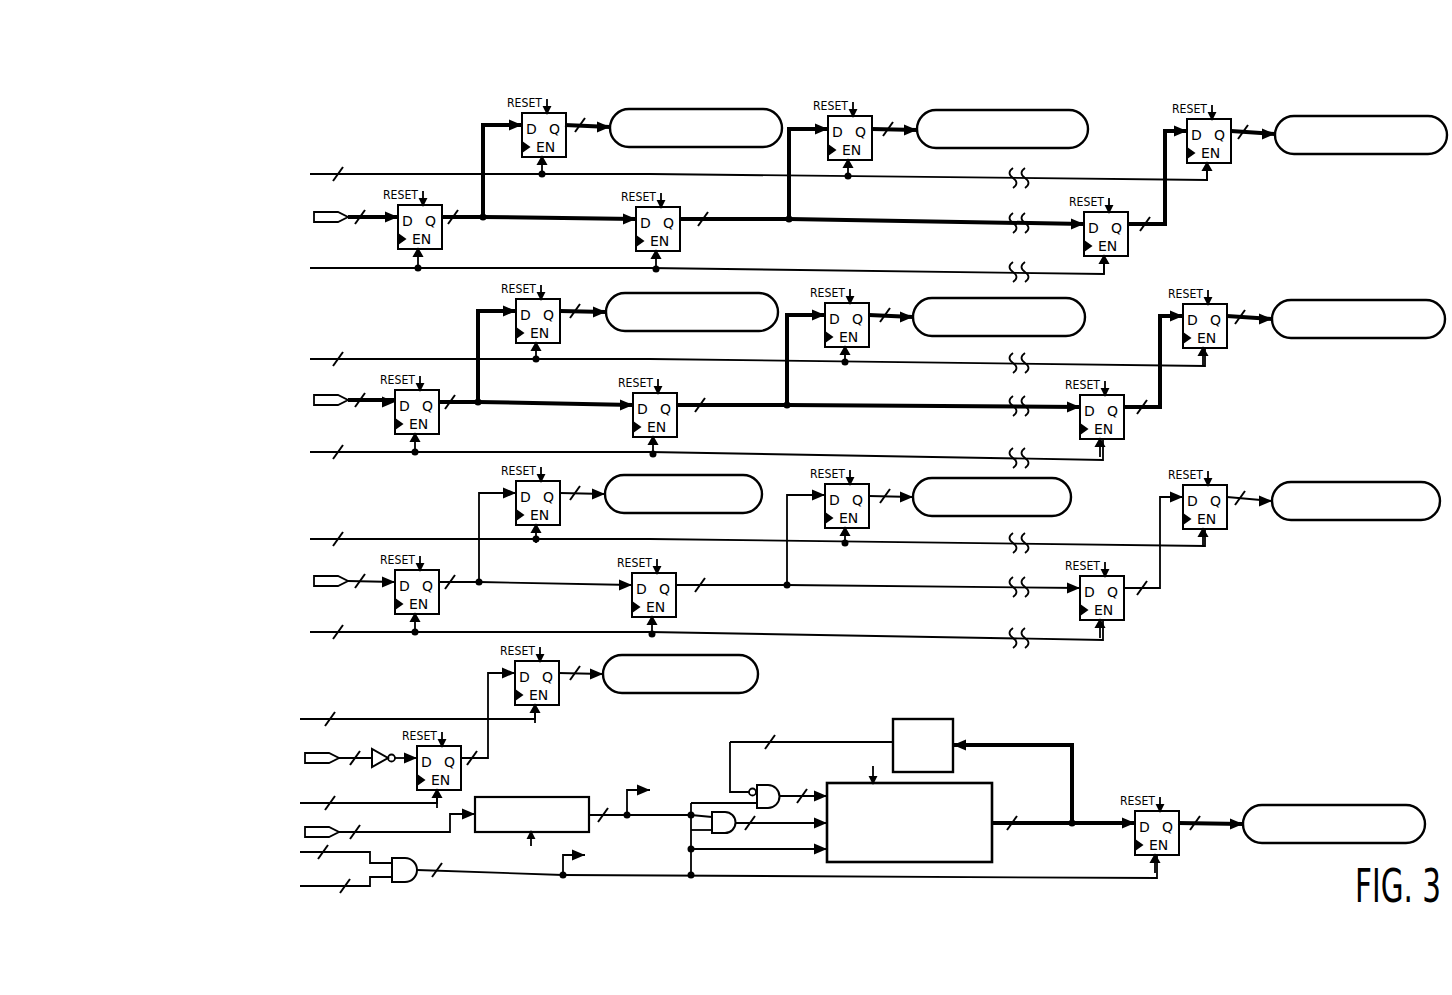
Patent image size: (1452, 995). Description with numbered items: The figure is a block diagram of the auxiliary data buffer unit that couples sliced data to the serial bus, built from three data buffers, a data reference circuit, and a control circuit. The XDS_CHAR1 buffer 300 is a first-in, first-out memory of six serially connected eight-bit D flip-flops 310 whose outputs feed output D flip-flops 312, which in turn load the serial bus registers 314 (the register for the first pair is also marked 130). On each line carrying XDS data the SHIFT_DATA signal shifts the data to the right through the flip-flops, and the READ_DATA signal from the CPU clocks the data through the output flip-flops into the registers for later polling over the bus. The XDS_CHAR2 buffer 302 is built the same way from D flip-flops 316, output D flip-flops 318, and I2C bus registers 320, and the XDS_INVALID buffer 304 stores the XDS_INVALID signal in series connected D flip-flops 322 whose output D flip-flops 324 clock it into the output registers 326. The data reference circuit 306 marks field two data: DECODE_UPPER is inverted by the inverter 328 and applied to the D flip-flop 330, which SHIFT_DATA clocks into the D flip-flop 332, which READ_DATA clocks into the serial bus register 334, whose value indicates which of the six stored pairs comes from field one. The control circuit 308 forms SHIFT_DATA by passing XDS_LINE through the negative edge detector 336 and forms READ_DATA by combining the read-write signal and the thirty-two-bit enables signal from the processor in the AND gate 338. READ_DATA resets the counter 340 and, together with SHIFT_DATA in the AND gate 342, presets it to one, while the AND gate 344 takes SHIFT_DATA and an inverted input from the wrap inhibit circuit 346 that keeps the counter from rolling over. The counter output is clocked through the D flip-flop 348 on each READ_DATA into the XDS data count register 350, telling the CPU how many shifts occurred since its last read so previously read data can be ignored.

The XDS pair 1 character 1 output register 130 is at (678, 94).
The XDS_CHAR1 buffer 300 is at (206, 190).
The XDS_CHAR2 buffer 302 is at (200, 371).
The XDS_INVALID buffer 304 is at (200, 564).
The data reference circuit 306 is at (218, 824).
The control circuit 308 is at (183, 853).
The 8-bit wide D flip-flops 310 is at (443, 242).
The output D flip-flops 312 is at (550, 112).
The serial bus registers 314 is at (711, 109).
The D flip-flops 316 is at (440, 428).
The output D flip-flops 318 is at (560, 333).
The I2C bus registers 320 is at (1350, 360).
The series connected D flip-flops 322 is at (440, 604).
The output D flip-flops 324 is at (561, 515).
The output registers 326 is at (715, 513).
The inverter 328 is at (385, 746).
The D flip-flop 330 is at (462, 784).
The D flip-flop 332 is at (553, 706).
The serial bus register 334 is at (760, 675).
The negative edge detector 336 is at (540, 796).
The AND gate 338 is at (403, 884).
The counter 340 is at (1000, 790).
The AND gate 342 is at (718, 836).
The AND gate 344 is at (772, 785).
The wrap inhibit circuit 346 is at (917, 719).
The D flip-flop 348 is at (1135, 811).
The XDS data count register 350 is at (1333, 805).